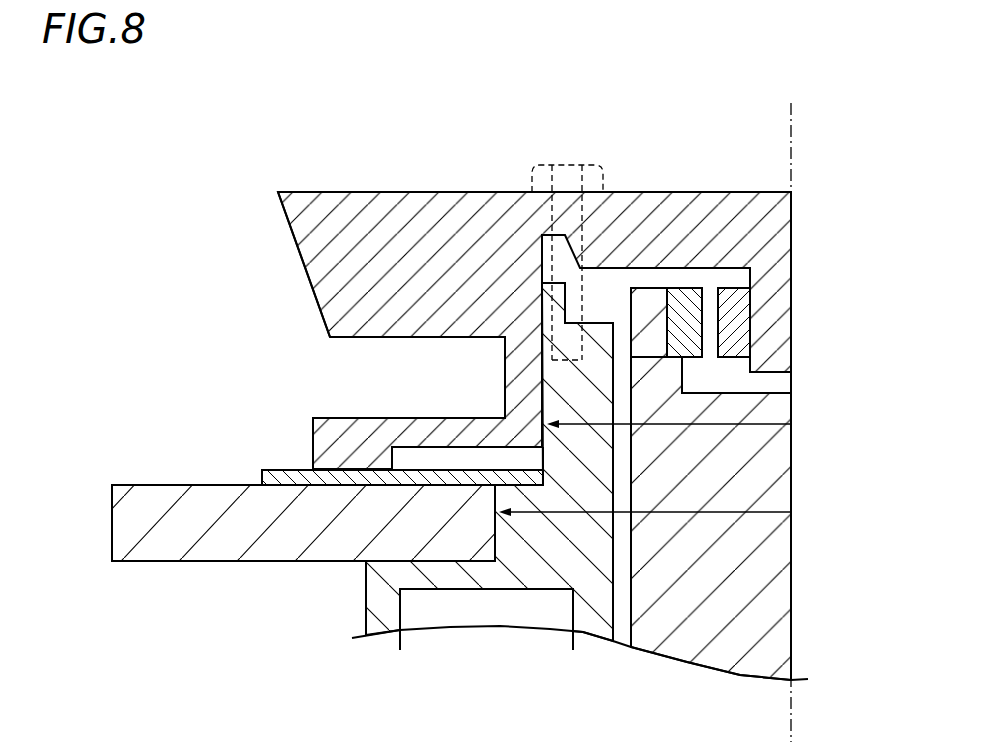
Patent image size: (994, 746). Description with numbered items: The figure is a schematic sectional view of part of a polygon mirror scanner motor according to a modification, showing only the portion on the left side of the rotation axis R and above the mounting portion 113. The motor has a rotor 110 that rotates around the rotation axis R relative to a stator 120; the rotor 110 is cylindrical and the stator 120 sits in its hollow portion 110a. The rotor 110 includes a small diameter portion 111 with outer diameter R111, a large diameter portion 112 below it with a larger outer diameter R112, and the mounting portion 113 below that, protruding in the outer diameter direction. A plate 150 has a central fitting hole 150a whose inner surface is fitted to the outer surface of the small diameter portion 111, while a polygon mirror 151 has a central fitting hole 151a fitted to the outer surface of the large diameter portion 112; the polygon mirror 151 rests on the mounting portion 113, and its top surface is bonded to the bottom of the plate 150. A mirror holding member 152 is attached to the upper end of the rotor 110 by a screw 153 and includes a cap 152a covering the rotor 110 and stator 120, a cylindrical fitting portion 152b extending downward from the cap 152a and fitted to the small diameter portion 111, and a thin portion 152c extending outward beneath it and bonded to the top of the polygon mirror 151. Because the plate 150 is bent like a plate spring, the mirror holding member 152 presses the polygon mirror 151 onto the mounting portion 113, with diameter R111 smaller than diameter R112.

The rotor 110 is at (569, 556).
The hollow portion 110a is at (614, 356).
The small diameter portion 111 is at (597, 390).
The large diameter portion 112 is at (560, 493).
The mounting portion 113 is at (463, 578).
The stator 120 is at (680, 620).
The plate 150 is at (288, 470).
The fitting hole 150a is at (545, 417).
The polygon mirror 151 is at (171, 490).
The fitting hole 151a is at (497, 535).
The mirror holding member 152 is at (443, 203).
The cap 152a is at (321, 293).
The fitting portion 152b is at (517, 357).
The thin portion 152c is at (320, 418).
The screw 153 is at (572, 163).
The diameter of the small diameter portion R111 is at (760, 424).
The diameter of the large diameter portion R112 is at (760, 513).
The rotation axis R is at (791, 149).